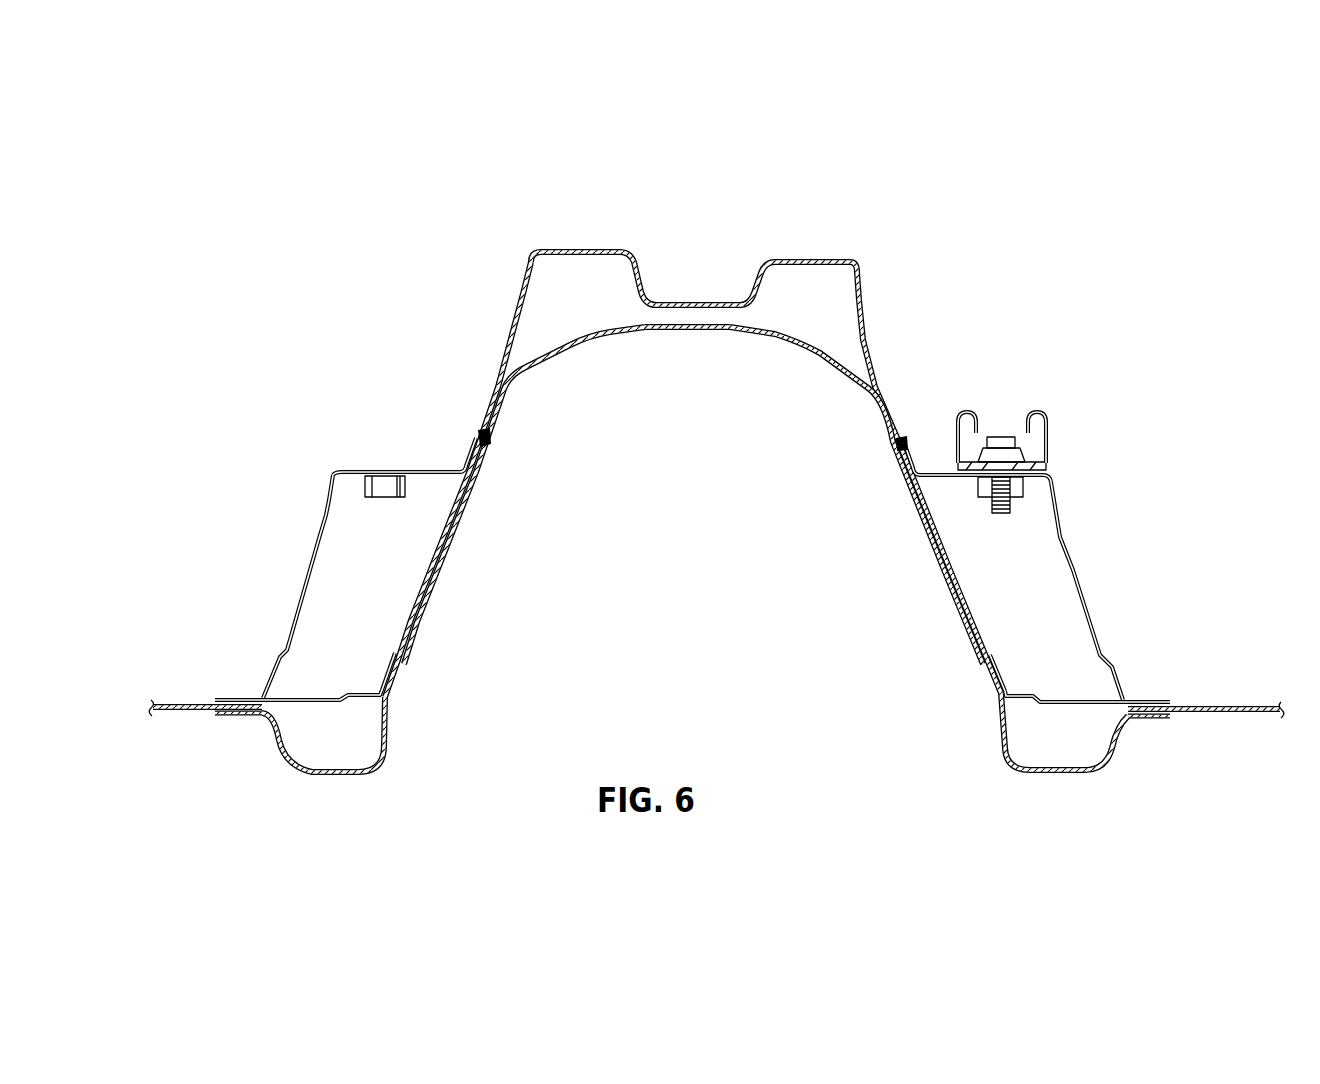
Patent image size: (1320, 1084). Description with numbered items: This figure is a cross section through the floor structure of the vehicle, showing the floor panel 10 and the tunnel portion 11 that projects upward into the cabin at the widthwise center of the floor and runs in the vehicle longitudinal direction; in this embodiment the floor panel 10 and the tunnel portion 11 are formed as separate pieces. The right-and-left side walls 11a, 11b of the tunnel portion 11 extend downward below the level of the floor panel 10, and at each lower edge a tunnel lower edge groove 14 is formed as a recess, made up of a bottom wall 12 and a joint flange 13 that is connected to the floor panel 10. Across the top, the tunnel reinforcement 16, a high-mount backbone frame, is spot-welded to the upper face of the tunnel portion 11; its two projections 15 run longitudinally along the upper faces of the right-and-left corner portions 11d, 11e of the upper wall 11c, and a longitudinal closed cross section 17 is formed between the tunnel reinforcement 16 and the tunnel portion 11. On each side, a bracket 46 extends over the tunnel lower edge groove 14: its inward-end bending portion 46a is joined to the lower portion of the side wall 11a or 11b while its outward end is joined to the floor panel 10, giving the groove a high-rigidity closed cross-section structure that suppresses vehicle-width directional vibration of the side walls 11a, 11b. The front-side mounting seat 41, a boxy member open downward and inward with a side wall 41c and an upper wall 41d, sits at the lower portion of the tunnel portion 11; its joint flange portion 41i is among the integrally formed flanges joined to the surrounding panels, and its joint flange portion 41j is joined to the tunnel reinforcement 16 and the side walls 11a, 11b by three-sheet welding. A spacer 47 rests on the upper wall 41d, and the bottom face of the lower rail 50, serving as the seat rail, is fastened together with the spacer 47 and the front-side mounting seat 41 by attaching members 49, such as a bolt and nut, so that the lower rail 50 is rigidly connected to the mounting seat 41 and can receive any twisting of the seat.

The floor panel 10 is at (172, 700).
The tunnel portion 11 is at (689, 507).
The side wall 11a is at (954, 592).
The side wall 11b is at (424, 610).
The upper wall 11c is at (686, 333).
The corner portion 11d is at (837, 357).
The corner portion 11e is at (545, 355).
The bottom wall 12 is at (340, 776).
The joint flange 13 is at (225, 717).
The tunnel lower edge groove 14 is at (695, 762).
The projection 15 is at (540, 248).
The tunnel reinforcement 16 is at (862, 255).
The closed cross section 17 is at (593, 300).
The front-side mounting seat 41 is at (703, 522).
The side wall 41c is at (320, 525).
The upper wall 41d is at (357, 470).
The joint flange portion 41i is at (218, 697).
The joint flange portion 41j is at (468, 443).
The bracket 46 is at (694, 639).
The inward-end bending portion 46a is at (383, 665).
The spacer 47 is at (1037, 465).
The attaching member 49 is at (377, 498).
The lower rail 50 is at (1047, 412).